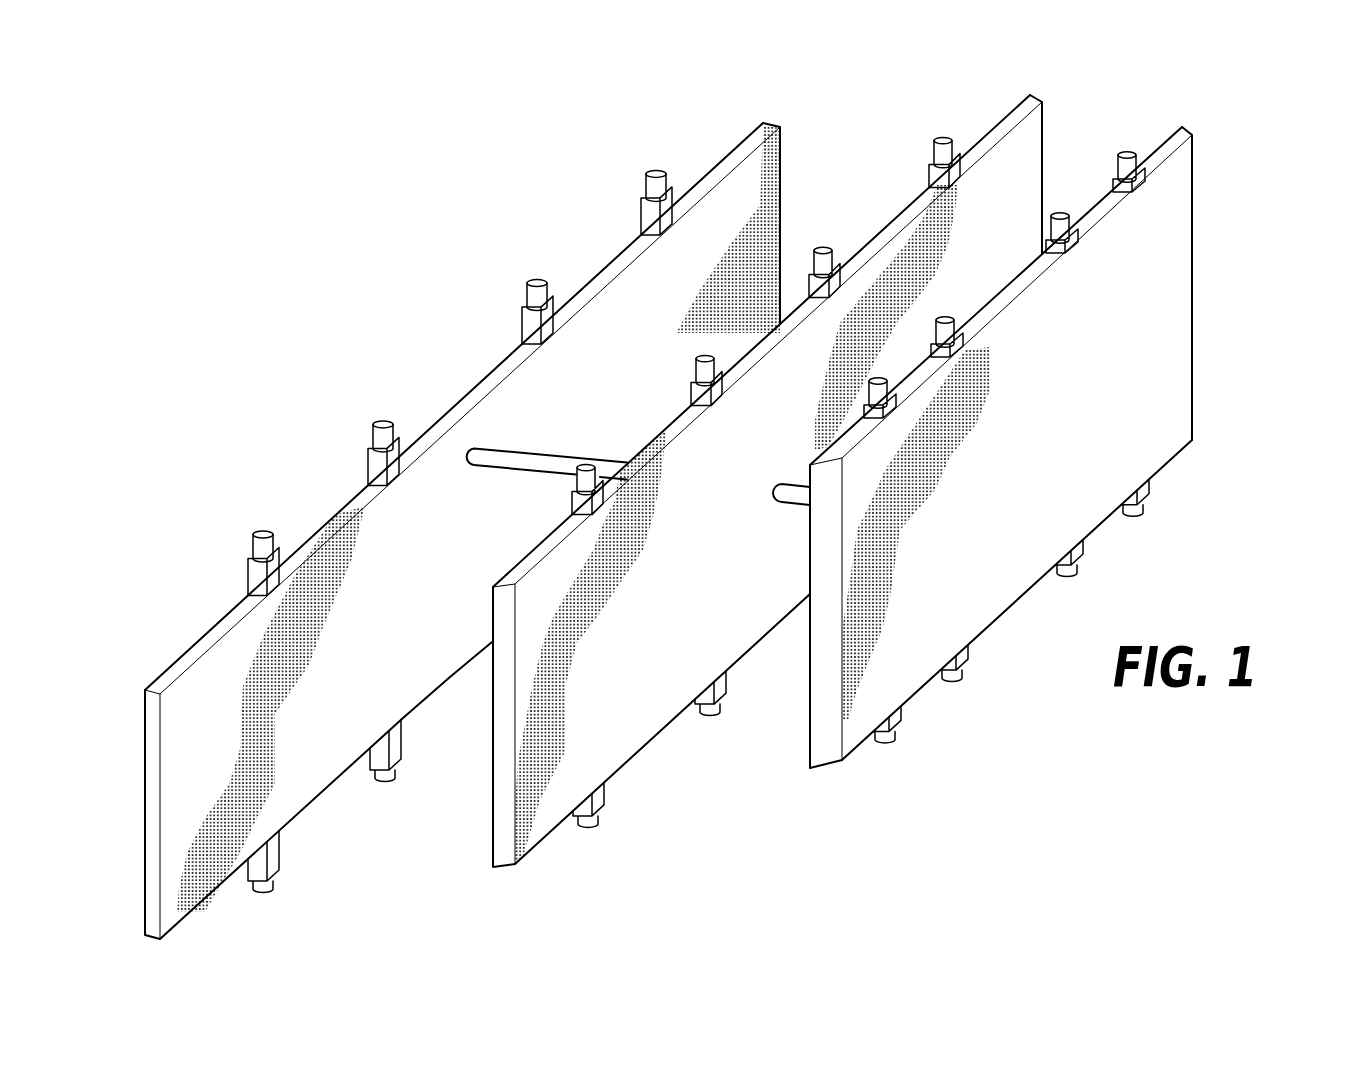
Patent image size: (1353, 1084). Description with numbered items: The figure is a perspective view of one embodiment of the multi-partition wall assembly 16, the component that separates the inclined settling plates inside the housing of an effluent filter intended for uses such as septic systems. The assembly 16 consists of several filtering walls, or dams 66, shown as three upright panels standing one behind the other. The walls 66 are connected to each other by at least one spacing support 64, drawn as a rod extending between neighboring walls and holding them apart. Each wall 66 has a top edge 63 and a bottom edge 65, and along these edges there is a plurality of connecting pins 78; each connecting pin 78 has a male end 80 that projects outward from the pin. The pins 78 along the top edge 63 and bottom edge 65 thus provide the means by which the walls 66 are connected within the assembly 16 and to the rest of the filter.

The multi-partition wall assembly 16 is at (706, 492).
The top edge 63 is at (735, 158).
The spacing support 64 is at (502, 452).
The bottom edge 65 is at (295, 820).
The filtering wall 66 is at (196, 762).
The connecting pin 78 is at (250, 582).
The male end 80 is at (262, 535).